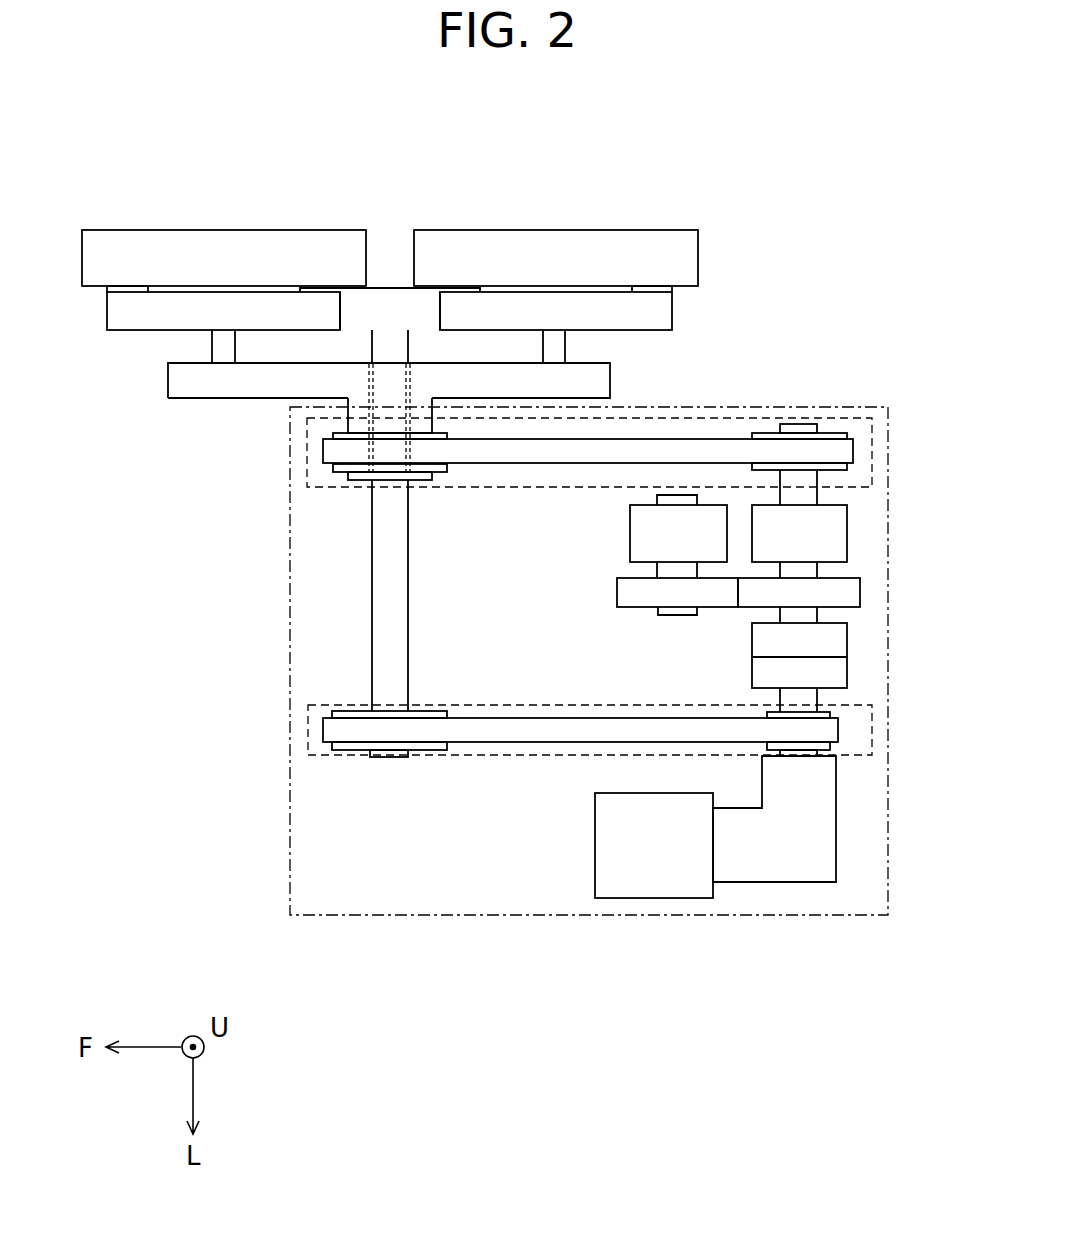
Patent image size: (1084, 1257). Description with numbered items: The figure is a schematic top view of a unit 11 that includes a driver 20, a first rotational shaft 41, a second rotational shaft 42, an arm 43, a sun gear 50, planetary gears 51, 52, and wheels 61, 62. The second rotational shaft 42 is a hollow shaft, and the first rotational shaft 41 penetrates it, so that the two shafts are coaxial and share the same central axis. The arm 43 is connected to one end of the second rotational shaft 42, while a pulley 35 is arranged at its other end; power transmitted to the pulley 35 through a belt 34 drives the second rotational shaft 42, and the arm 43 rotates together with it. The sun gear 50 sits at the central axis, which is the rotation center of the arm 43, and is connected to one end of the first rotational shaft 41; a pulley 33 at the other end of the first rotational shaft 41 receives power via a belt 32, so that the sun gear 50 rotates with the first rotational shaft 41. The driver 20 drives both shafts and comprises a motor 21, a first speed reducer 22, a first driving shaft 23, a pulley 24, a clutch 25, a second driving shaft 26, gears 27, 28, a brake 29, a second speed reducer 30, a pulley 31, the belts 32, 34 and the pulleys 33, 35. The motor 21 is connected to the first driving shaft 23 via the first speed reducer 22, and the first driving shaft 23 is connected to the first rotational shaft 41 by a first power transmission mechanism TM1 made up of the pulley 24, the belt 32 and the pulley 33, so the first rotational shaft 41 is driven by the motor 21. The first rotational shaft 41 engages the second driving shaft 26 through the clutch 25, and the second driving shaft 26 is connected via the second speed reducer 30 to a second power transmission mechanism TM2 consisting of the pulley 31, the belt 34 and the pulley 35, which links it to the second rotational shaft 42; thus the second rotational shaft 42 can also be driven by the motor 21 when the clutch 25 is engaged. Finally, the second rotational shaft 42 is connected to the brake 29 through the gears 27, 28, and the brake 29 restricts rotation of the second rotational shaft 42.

The unit 11 is at (860, 104).
The driver 20 is at (290, 893).
The motor 21 is at (653, 875).
The first speed reducer 22 is at (823, 829).
The first driving shaft 23 is at (828, 695).
The pulley 24 is at (838, 746).
The clutch 25 is at (835, 681).
The second driving shaft 26 is at (828, 615).
The gear 27 is at (845, 592).
The gear 28 is at (710, 590).
The brake 29 is at (650, 518).
The second speed reducer 30 is at (833, 532).
The pulley 31 is at (835, 437).
The belt 32 is at (532, 730).
The pulley 33 is at (325, 742).
The belt 34 is at (568, 452).
The pulley 35 is at (348, 468).
The first rotational shaft 41 is at (385, 607).
The second rotational shaft 42 is at (348, 404).
The arm 43 is at (178, 373).
The sun gear 50 is at (378, 305).
The planetary gear 51 is at (658, 309).
The planetary gear 52 is at (120, 311).
The wheel 61 is at (658, 243).
The wheel 62 is at (121, 243).
The first power transmission mechanism TM1 is at (307, 730).
The second power transmission mechanism TM2 is at (307, 447).